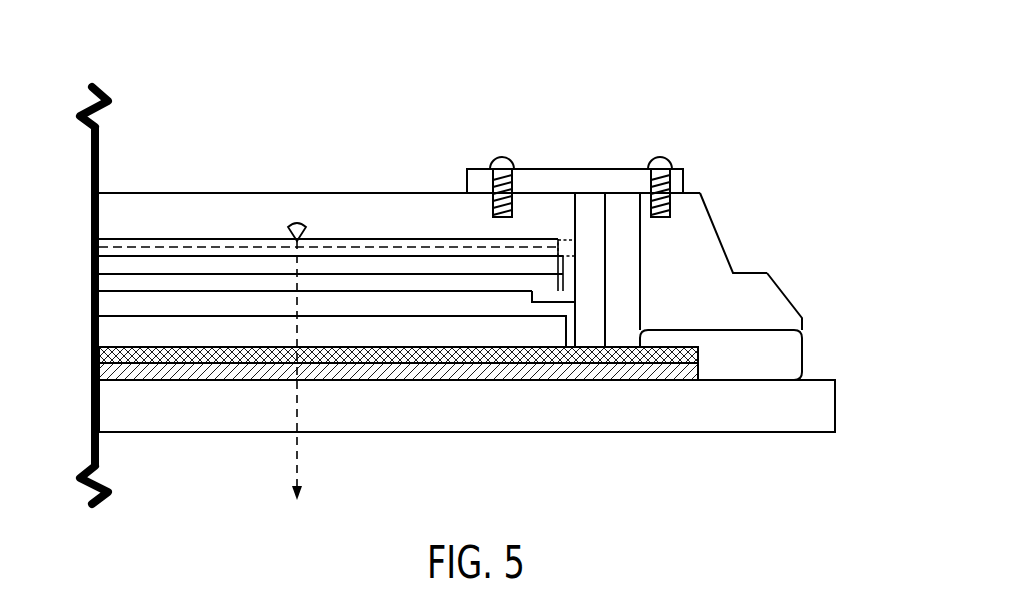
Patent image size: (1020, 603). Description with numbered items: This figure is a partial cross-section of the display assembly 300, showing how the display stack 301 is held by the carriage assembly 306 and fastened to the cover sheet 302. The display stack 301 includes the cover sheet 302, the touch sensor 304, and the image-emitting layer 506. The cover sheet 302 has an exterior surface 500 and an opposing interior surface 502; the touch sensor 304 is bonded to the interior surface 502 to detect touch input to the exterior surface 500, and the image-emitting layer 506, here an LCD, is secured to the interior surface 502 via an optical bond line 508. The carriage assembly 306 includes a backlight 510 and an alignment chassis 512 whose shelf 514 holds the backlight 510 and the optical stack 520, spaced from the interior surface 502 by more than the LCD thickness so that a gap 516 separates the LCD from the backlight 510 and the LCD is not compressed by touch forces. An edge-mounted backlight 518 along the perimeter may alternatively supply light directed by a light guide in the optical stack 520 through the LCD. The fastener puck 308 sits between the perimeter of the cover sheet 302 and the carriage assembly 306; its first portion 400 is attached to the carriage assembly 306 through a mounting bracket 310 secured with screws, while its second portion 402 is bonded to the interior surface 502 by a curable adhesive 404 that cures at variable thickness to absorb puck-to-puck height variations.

The display assembly 300 is at (768, 56).
The display stack 301 is at (229, 445).
The cover sheet 302 is at (480, 418).
The touch sensor 304 is at (112, 371).
The carriage assembly 306 is at (240, 142).
The fastener puck 308 is at (725, 251).
The mounting bracket 310 is at (550, 172).
The first portion 400 is at (693, 193).
The second portion 402 is at (767, 330).
The curable adhesive 404 is at (805, 343).
The exterior surface 500 is at (750, 432).
The interior surface 502 is at (808, 378).
The image-emitting layer 506 is at (115, 326).
The optical bond line 508 is at (113, 357).
The backlight 510 is at (295, 226).
The alignment chassis 512 is at (592, 237).
The shelf 514 is at (528, 293).
The gap 516 is at (122, 299).
The edge-mounted backlight 518 is at (568, 238).
The optical stack 520 is at (87, 237).